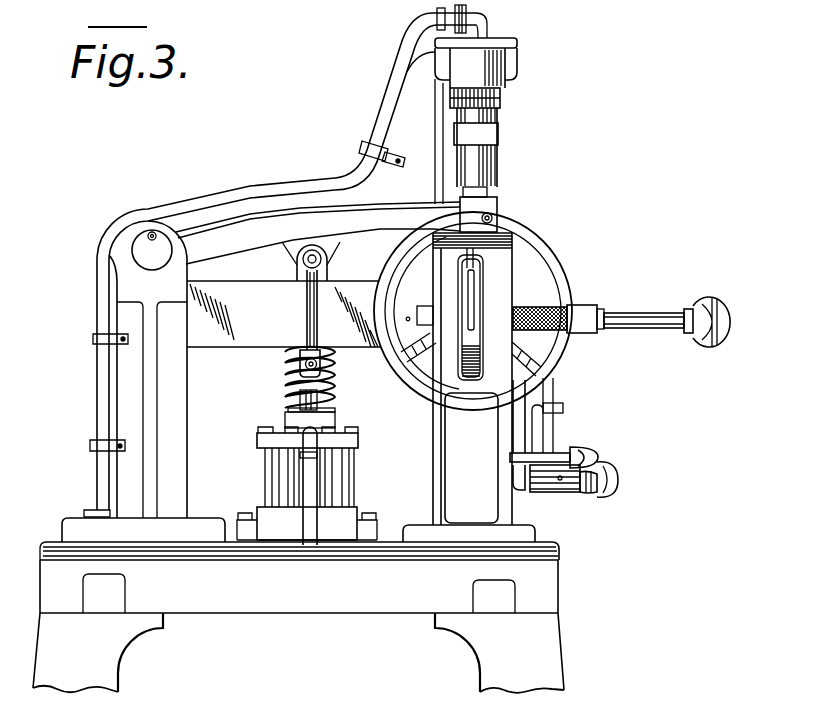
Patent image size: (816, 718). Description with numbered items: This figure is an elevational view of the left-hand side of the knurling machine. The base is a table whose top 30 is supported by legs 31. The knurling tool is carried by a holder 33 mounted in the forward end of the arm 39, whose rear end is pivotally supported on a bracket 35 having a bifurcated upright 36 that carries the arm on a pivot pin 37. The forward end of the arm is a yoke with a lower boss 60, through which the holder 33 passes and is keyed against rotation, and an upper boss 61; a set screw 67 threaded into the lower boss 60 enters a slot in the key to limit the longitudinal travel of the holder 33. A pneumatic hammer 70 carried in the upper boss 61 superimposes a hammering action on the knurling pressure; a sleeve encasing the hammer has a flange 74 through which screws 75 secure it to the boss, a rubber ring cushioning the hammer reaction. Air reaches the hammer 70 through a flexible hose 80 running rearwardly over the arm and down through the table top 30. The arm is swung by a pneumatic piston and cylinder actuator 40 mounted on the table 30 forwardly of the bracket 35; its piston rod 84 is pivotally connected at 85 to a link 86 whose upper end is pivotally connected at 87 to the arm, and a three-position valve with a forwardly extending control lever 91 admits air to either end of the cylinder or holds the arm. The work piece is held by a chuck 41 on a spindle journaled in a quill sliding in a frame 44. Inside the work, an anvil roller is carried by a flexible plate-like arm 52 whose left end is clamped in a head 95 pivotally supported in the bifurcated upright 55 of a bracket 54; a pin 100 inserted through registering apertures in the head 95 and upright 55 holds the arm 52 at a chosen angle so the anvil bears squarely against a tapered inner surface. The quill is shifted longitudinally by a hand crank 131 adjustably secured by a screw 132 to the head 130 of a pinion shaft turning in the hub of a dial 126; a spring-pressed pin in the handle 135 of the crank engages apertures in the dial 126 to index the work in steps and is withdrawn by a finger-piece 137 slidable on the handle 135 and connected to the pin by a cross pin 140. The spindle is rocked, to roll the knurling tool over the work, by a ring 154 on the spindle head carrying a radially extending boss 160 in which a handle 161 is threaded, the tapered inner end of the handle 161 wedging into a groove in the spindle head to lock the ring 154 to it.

The table top 30 is at (293, 598).
The legs 31 is at (108, 668).
The holder 33 is at (498, 193).
The bracket 35 is at (77, 527).
The bifurcated upright 36 is at (123, 407).
The pivot pin 37 is at (135, 238).
The arm 39 is at (263, 229).
The pneumatic piston cylinder device 40 is at (337, 483).
The chuck 41 is at (415, 273).
The frame 44 is at (215, 336).
The anvil arm 52 is at (474, 285).
The bracket 54 is at (443, 533).
The bifurcated upright 55 is at (433, 438).
The lower boss 60 is at (497, 200).
The upper boss 61 is at (503, 92).
The set screw 67 is at (493, 217).
The hammer 70 is at (498, 158).
The flange 74 is at (518, 44).
The screws 75 is at (500, 37).
The hose 80 is at (100, 373).
The piston rod 84 is at (300, 402).
The pivotal connection 85 is at (299, 362).
The link 86 is at (306, 300).
The pivotal connection 87 is at (302, 259).
The control lever 91 is at (560, 452).
The head 95 is at (467, 367).
The pin 100 is at (530, 308).
The dial 126 is at (518, 490).
The head 130 is at (550, 395).
The hand crank 131 is at (544, 430).
The screw 132 is at (563, 407).
The handle 135 is at (619, 478).
The finger-piece 137 is at (582, 495).
The cross pin 140 is at (560, 481).
The ring 154 is at (550, 262).
The boss 160 is at (592, 305).
The handle 161 is at (657, 322).